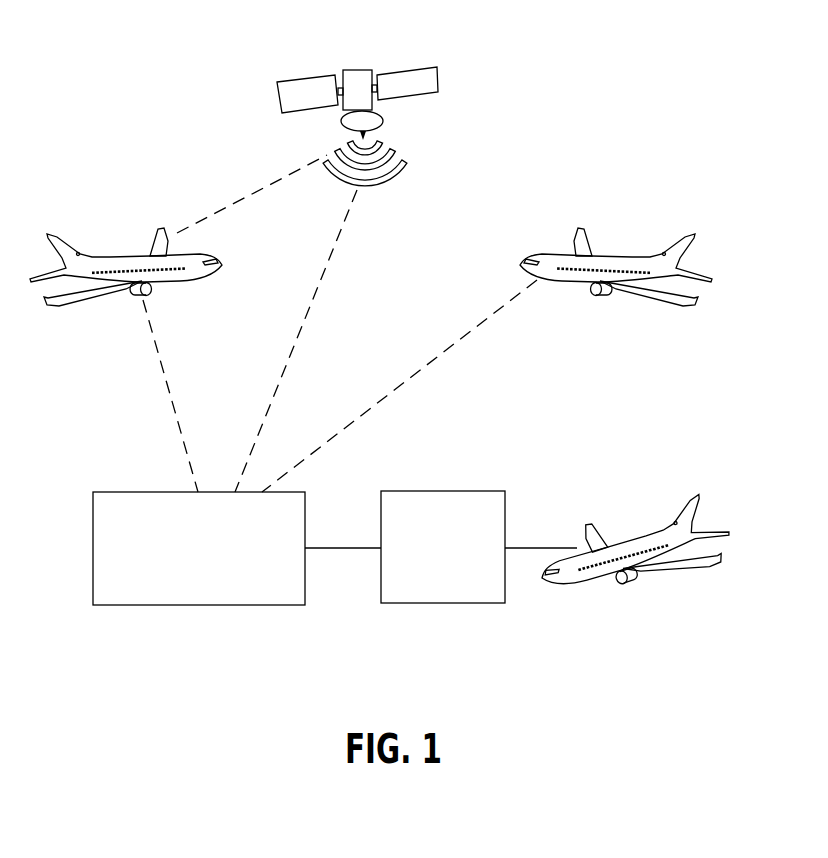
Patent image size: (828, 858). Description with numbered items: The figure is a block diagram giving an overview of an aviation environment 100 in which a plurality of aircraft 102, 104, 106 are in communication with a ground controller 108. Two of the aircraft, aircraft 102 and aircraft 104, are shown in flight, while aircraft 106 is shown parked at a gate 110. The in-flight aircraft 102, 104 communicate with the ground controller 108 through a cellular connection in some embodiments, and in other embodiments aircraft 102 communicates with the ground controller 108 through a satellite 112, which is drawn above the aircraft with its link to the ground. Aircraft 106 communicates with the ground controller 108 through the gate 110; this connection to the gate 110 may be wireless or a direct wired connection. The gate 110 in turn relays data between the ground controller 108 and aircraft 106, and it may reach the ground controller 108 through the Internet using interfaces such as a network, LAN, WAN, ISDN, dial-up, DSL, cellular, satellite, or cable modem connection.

The aviation environment 100 is at (177, 63).
The aircraft 102 is at (102, 262).
The aircraft 104 is at (615, 258).
The aircraft 106 is at (637, 540).
The ground controller 108 is at (120, 492).
The gate 110 is at (443, 491).
The satellite 112 is at (405, 70).